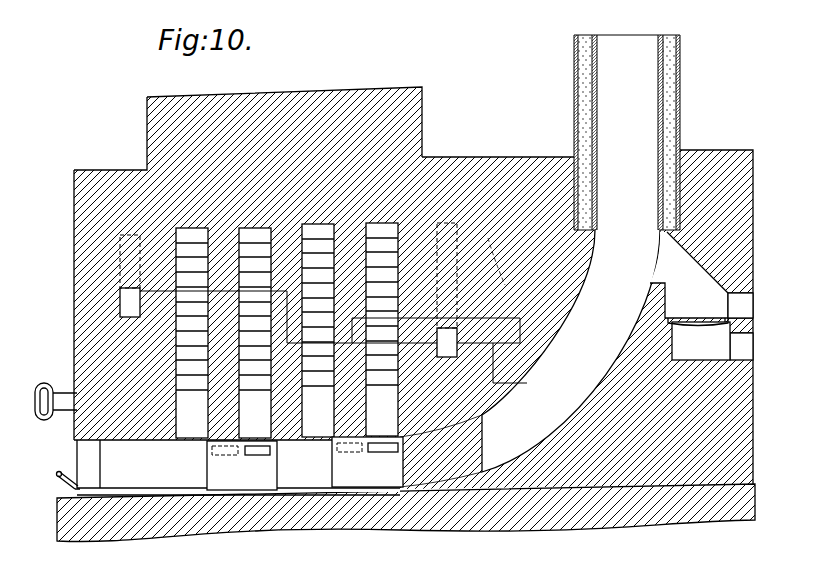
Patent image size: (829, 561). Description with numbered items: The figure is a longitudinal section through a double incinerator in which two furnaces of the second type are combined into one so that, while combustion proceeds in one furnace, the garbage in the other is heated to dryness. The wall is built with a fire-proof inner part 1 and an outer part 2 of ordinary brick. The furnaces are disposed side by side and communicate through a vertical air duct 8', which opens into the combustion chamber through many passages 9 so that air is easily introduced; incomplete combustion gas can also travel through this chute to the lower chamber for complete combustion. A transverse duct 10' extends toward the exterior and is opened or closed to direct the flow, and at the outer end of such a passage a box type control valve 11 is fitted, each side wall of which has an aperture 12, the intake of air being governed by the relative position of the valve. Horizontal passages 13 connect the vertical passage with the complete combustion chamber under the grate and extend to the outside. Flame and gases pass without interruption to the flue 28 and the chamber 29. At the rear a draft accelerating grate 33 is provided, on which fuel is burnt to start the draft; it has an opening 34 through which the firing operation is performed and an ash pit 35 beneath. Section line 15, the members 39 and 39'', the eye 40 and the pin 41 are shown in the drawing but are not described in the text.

The inner part 1 is at (413, 288).
The outer part 2 is at (284, 122).
The vertical air duct 8' is at (287, 330).
The passages 9 is at (287, 308).
The transverse duct 10' is at (237, 467).
The box type control valve 11 is at (120, 291).
The aperture 12 is at (318, 545).
The horizontal passages 13 is at (760, 347).
The section line 15 is at (760, 440).
The flue 28 is at (530, 358).
The chamber 29 is at (627, 132).
The draft accelerating grate 33 is at (698, 322).
The opening 34 is at (750, 313).
The ash pit 35 is at (750, 346).
The box member 39 is at (305, 463).
The insert in box member 39'' is at (305, 462).
The eye ring 40 is at (60, 410).
The pin 41 is at (58, 478).